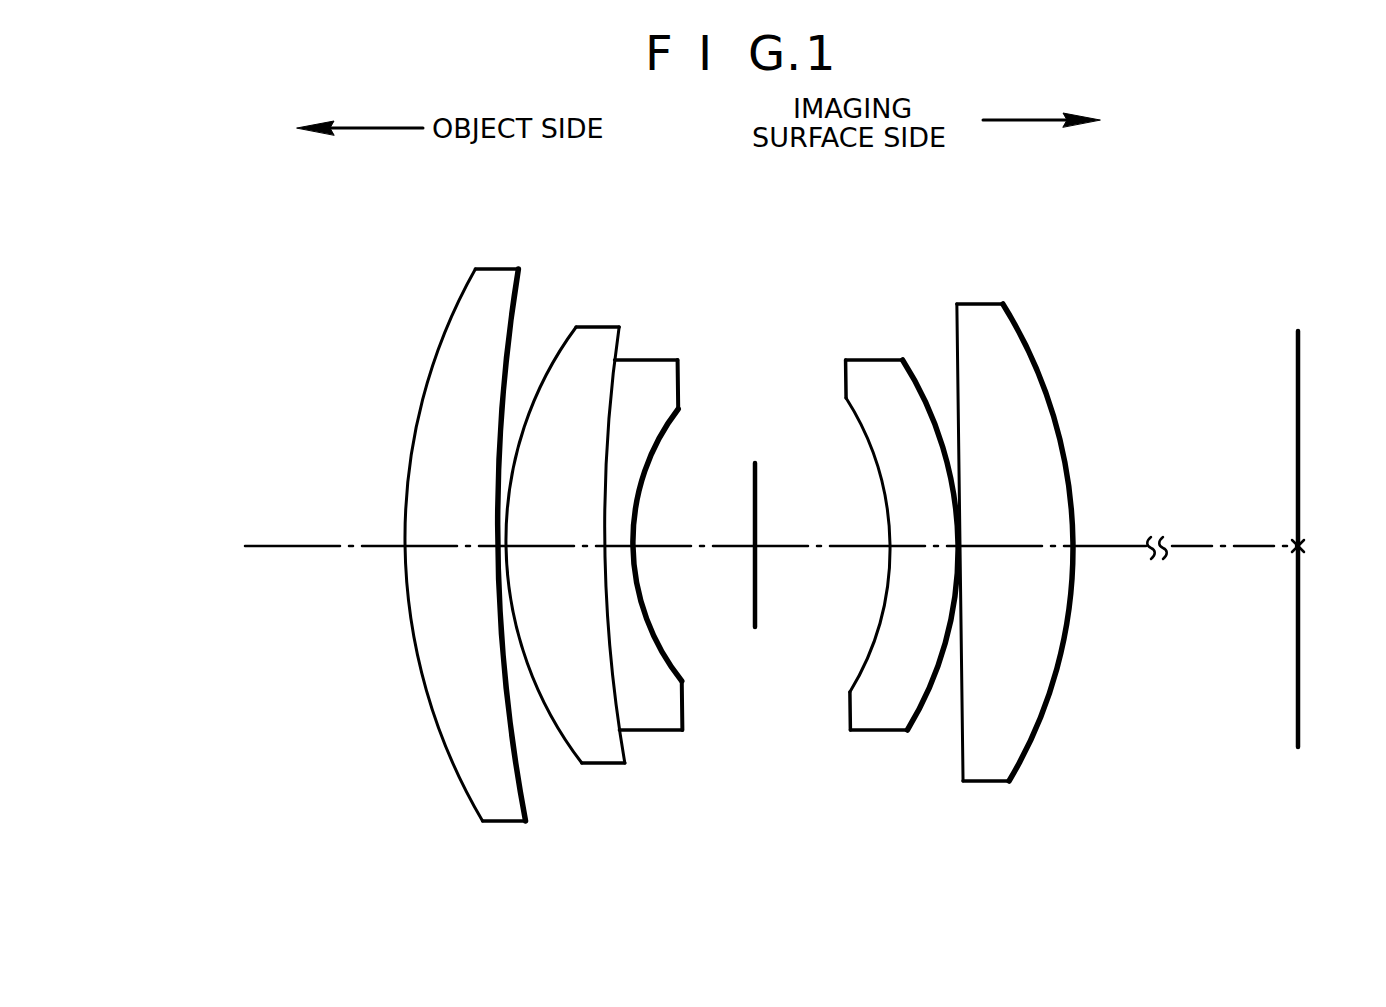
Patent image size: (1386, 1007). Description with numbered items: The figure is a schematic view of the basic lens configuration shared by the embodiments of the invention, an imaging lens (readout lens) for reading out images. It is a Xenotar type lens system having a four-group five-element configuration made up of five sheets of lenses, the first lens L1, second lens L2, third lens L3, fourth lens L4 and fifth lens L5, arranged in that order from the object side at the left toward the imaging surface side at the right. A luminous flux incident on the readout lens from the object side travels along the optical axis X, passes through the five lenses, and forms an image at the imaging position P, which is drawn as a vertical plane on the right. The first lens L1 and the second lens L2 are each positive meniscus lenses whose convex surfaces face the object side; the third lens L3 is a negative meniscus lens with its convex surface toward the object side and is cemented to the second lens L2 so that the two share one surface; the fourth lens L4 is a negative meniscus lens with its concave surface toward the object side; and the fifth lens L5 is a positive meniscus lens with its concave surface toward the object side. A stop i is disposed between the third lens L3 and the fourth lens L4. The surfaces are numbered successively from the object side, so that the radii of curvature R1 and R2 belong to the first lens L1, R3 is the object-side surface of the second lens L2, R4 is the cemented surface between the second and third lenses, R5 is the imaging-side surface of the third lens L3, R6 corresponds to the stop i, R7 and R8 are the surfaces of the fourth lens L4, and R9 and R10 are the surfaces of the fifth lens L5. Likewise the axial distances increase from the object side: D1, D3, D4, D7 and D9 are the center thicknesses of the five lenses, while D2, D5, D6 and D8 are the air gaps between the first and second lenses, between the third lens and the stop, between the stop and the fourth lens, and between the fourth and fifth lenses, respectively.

The first lens L1 is at (501, 525).
The second lens L2 is at (595, 539).
The third lens L3 is at (679, 516).
The fourth lens L4 is at (876, 538).
The fifth lens L5 is at (1007, 527).
The radius of curvature of first lens surface R1 is at (452, 762).
The radius of curvature of second lens surface R2 is at (527, 772).
The radius of curvature of third lens surface R3 is at (564, 741).
The radius of curvature of fourth lens surface R4 is at (617, 693).
The radius of curvature of fifth lens surface R5 is at (669, 656).
The radius of curvature of sixth surface R6 is at (752, 603).
The radius of curvature of seventh lens surface R7 is at (862, 666).
The radius of curvature of eighth lens surface R8 is at (923, 698).
The radius of curvature of ninth lens surface R9 is at (963, 741).
The radius of curvature of tenth lens surface R10 is at (1027, 753).
The center thickness of first lens D1 is at (453, 533).
The air gap between first and second lenses D2 is at (506, 540).
The center thickness of second lens D3 is at (558, 531).
The center thickness of third lens D4 is at (619, 549).
The air gap between third lens and stop D5 is at (699, 531).
The air gap between stop and fourth lens D6 is at (819, 531).
The center thickness of fourth lens D7 is at (919, 531).
The air gap between fourth and fifth lenses D8 is at (964, 545).
The center thickness of fifth lens D9 is at (1023, 531).
The stop i is at (729, 541).
The optical axis X is at (302, 551).
The imaging position P is at (1310, 539).